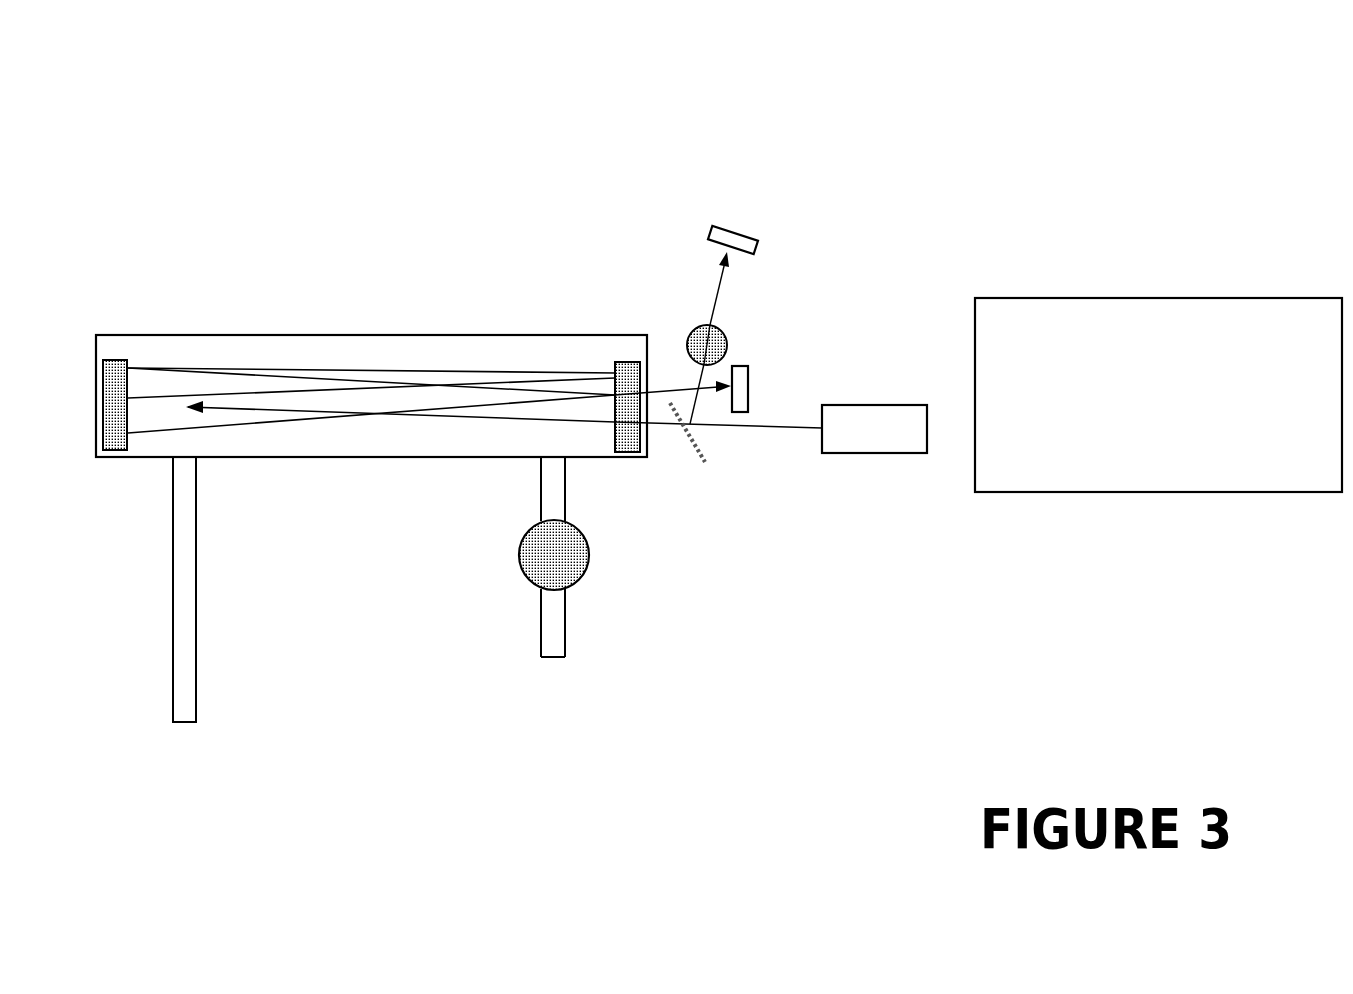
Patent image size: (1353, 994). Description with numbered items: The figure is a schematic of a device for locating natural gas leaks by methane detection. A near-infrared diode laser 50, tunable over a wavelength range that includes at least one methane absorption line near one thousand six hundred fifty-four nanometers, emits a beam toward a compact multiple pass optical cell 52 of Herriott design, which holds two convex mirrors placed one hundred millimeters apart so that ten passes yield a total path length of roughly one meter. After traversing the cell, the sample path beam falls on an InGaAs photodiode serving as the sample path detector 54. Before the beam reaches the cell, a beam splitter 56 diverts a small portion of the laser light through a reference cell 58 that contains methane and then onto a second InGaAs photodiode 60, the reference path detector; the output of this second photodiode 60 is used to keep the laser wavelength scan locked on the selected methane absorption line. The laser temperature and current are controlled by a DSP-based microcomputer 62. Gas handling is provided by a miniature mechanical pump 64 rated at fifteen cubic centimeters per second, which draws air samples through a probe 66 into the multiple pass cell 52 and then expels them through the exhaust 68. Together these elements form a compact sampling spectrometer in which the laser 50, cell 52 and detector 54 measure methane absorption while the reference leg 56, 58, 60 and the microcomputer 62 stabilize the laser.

The near-infrared diode laser 50 is at (858, 453).
The multiple pass optical cell 52 is at (300, 335).
The sample path detector 54 is at (750, 388).
The beam splitter 56 is at (705, 465).
The reference cell 58 is at (687, 333).
The second InGaAs photodiode 60 is at (710, 226).
The microcomputer 62 is at (1158, 395).
The mechanical pump 64 is at (519, 557).
The probe 66 is at (241, 631).
The exhaust 68 is at (548, 660).